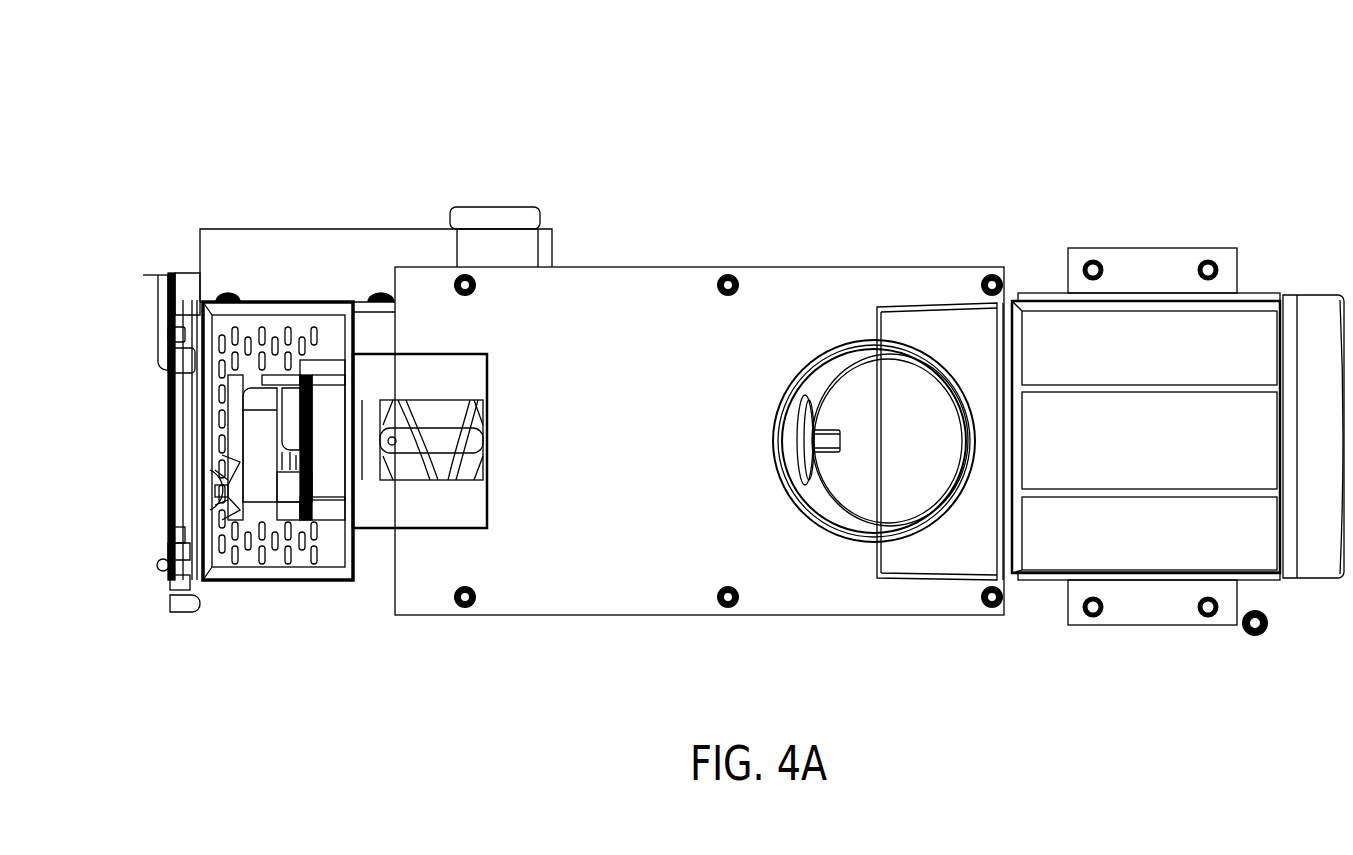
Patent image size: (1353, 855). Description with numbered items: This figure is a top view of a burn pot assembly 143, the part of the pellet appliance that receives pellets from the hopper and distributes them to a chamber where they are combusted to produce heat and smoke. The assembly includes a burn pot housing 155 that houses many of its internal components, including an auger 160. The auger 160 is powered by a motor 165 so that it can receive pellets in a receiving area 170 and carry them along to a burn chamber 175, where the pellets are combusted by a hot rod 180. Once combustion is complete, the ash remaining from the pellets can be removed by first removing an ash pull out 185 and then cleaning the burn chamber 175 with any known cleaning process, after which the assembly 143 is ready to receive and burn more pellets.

The burn pot assembly 143 is at (276, 116).
The burn pot housing 155 is at (637, 315).
The auger 160 is at (465, 448).
The motor 165 is at (252, 442).
The receiving area 170 is at (370, 465).
The burn chamber 175 is at (898, 480).
The hot rod 180 is at (832, 432).
The ash pull out 185 is at (1180, 388).